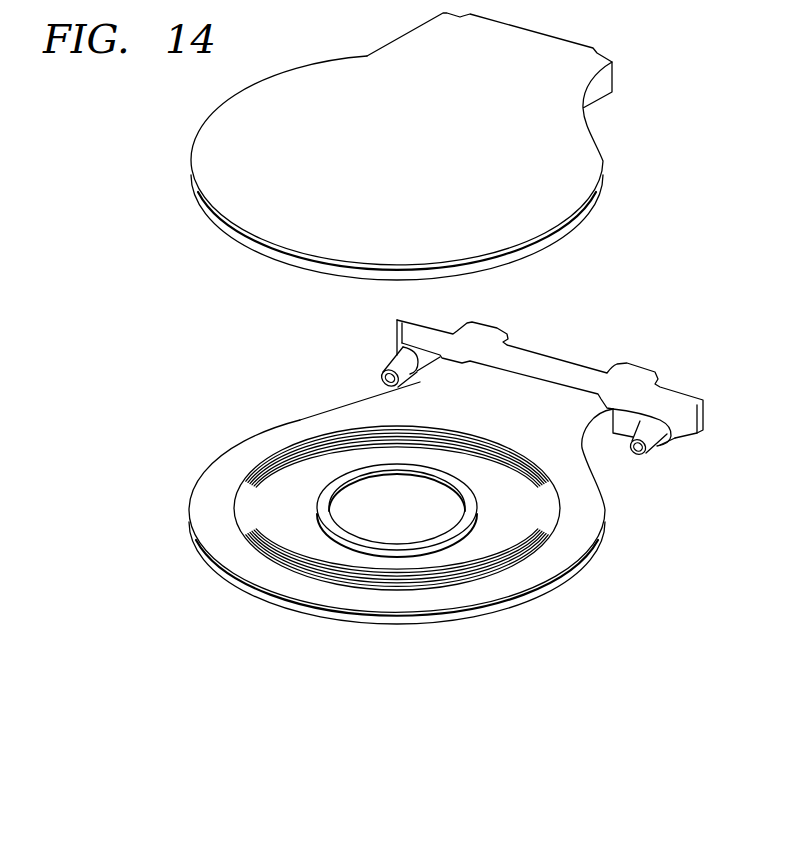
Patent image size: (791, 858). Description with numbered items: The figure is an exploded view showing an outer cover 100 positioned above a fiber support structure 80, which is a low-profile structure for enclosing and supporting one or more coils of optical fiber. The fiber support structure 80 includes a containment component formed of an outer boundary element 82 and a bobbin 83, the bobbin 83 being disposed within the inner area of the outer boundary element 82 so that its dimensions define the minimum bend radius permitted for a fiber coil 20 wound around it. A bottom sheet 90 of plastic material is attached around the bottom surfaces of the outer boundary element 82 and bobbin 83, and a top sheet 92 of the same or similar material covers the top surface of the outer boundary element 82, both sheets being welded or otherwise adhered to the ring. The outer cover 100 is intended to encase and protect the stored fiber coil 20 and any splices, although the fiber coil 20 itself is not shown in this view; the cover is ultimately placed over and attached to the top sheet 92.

The outer cover 100 is at (588, 158).
The fiber support structure 80 is at (80, 322).
The outer boundary element 82 is at (557, 585).
The bobbin 83 is at (477, 507).
The fiber coil 20 is at (318, 533).
The bottom sheet 90 is at (382, 582).
The top sheet 92 is at (231, 456).